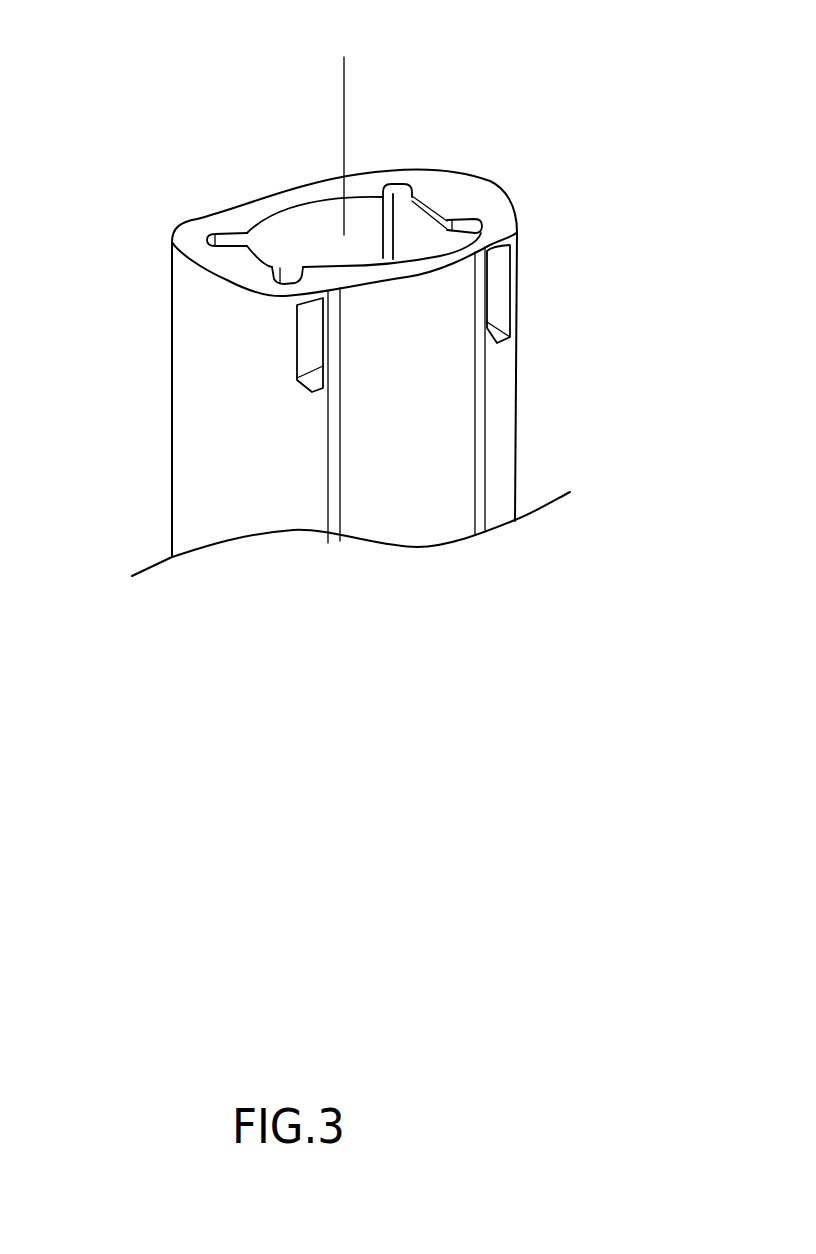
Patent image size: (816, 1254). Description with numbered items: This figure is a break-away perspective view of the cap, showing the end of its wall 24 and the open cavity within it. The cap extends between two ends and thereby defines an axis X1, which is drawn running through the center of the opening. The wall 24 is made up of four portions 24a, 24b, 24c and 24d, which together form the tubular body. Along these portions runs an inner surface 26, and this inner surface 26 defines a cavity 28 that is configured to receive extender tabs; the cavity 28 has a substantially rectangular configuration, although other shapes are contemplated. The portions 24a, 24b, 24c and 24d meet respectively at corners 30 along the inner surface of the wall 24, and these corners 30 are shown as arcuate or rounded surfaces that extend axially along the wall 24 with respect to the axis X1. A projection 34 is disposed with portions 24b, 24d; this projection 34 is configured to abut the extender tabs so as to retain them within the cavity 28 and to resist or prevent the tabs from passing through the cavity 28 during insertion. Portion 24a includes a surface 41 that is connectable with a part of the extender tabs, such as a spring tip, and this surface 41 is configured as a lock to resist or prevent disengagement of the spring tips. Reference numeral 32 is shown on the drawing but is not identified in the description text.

The axis X1 is at (346, 132).
The wall 24 is at (497, 393).
The portion 24a is at (423, 303).
The portion 24b is at (482, 192).
The portion 24c is at (276, 192).
The portion 24d is at (233, 273).
The inner surface 26 is at (348, 224).
The cavity 28 is at (282, 214).
The corners 30 is at (404, 182).
The post projection 32 is at (442, 197).
The projection 34 is at (418, 197).
The surface 41 is at (500, 328).